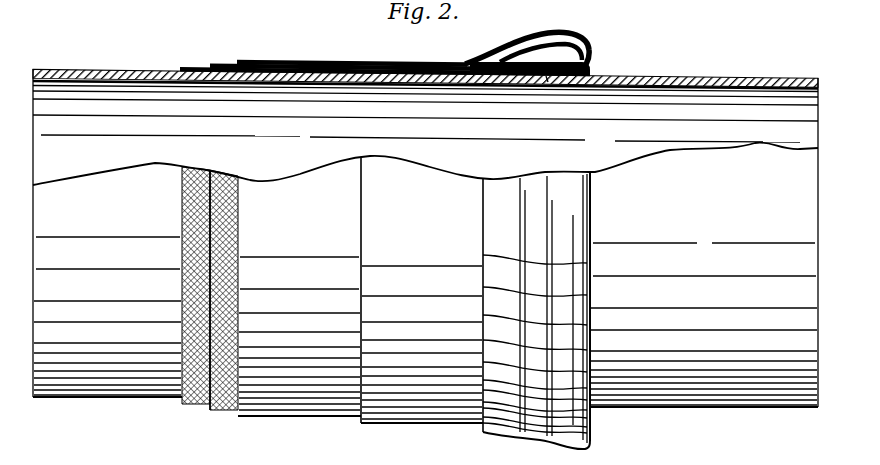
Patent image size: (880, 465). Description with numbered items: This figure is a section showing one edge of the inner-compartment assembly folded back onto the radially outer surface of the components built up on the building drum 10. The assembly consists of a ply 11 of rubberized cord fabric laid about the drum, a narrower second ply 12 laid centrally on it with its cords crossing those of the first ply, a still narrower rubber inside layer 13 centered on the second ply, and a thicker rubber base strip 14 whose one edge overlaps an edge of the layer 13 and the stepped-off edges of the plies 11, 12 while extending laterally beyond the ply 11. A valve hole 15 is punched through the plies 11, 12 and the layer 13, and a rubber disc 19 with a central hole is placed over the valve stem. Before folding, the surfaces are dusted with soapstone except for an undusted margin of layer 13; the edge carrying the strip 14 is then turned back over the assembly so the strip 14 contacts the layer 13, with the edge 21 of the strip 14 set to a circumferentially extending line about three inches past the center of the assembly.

The building drum 10 is at (98, 66).
The ply 11 is at (588, 40).
The second ply 12 is at (584, 54).
The rubber inside layer 13 is at (291, 59).
The rubber base strip 14 is at (397, 61).
The valve hole 15 is at (547, 77).
The rubber disc 19 is at (511, 61).
The edge 21 is at (365, 62).